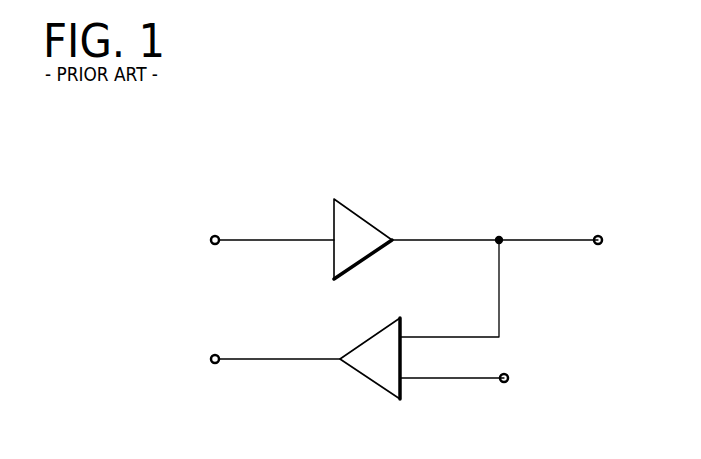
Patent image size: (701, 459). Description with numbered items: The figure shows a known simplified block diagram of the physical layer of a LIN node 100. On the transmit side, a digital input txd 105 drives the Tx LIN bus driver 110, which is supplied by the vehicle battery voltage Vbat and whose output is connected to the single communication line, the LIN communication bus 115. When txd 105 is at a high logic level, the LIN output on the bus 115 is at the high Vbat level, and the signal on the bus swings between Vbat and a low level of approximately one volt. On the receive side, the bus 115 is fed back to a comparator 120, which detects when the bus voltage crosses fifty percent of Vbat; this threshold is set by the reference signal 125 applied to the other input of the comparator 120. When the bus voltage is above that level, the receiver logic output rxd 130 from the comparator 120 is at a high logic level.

The LIN node 100 is at (580, 146).
The txd digital input 105 is at (216, 235).
The Tx LIN bus driver 110 is at (360, 212).
The LIN communication bus 115 is at (598, 235).
The comparator 120 is at (368, 336).
The reference signal 125 is at (456, 380).
The rxd receiver logic output 130 is at (216, 354).